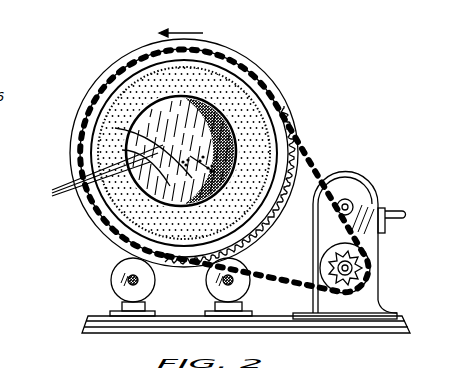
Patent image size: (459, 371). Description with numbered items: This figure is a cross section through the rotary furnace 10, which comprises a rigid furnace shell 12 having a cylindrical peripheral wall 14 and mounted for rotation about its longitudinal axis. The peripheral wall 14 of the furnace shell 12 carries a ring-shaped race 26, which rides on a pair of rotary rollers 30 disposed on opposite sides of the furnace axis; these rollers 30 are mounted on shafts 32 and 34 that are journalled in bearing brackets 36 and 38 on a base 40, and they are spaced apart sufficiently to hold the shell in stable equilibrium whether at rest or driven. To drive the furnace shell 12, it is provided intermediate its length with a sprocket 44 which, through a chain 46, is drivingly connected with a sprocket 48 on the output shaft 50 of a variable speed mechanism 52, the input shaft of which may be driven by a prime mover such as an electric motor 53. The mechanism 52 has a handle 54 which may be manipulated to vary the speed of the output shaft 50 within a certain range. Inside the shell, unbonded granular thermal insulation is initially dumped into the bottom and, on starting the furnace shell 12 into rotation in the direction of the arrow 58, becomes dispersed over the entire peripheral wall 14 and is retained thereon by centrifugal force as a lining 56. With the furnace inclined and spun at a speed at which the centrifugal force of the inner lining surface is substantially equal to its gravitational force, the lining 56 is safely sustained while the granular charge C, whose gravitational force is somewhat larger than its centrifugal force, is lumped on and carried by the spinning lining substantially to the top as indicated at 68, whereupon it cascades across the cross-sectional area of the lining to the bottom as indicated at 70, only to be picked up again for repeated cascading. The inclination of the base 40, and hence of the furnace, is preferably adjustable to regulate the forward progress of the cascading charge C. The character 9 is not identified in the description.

The light rays 9 is at (52, 193).
The rotary furnace 10 is at (265, 68).
The furnace shell 12 is at (214, 70).
The peripheral wall 14 is at (104, 101).
The ring-shaped race 26 is at (125, 65).
The rotary rollers 30 is at (117, 271).
The shaft 32 is at (125, 283).
The shaft 34 is at (220, 288).
The bearing bracket 36 is at (118, 305).
The bearing bracket 38 is at (242, 308).
The base 40 is at (140, 325).
The sprocket 44 is at (265, 101).
The chain 46 is at (307, 173).
The sprocket 48 is at (332, 258).
The output shaft 50 is at (338, 268).
The variable speed mechanism 52 is at (378, 247).
The electric motor 53 is at (356, 173).
The handle 54 is at (398, 212).
The lining 56 is at (116, 139).
The arrow 58 is at (182, 33).
The lumped charge position 68 is at (222, 137).
The cascading charge path 70 is at (115, 128).
The granular charge C is at (173, 131).